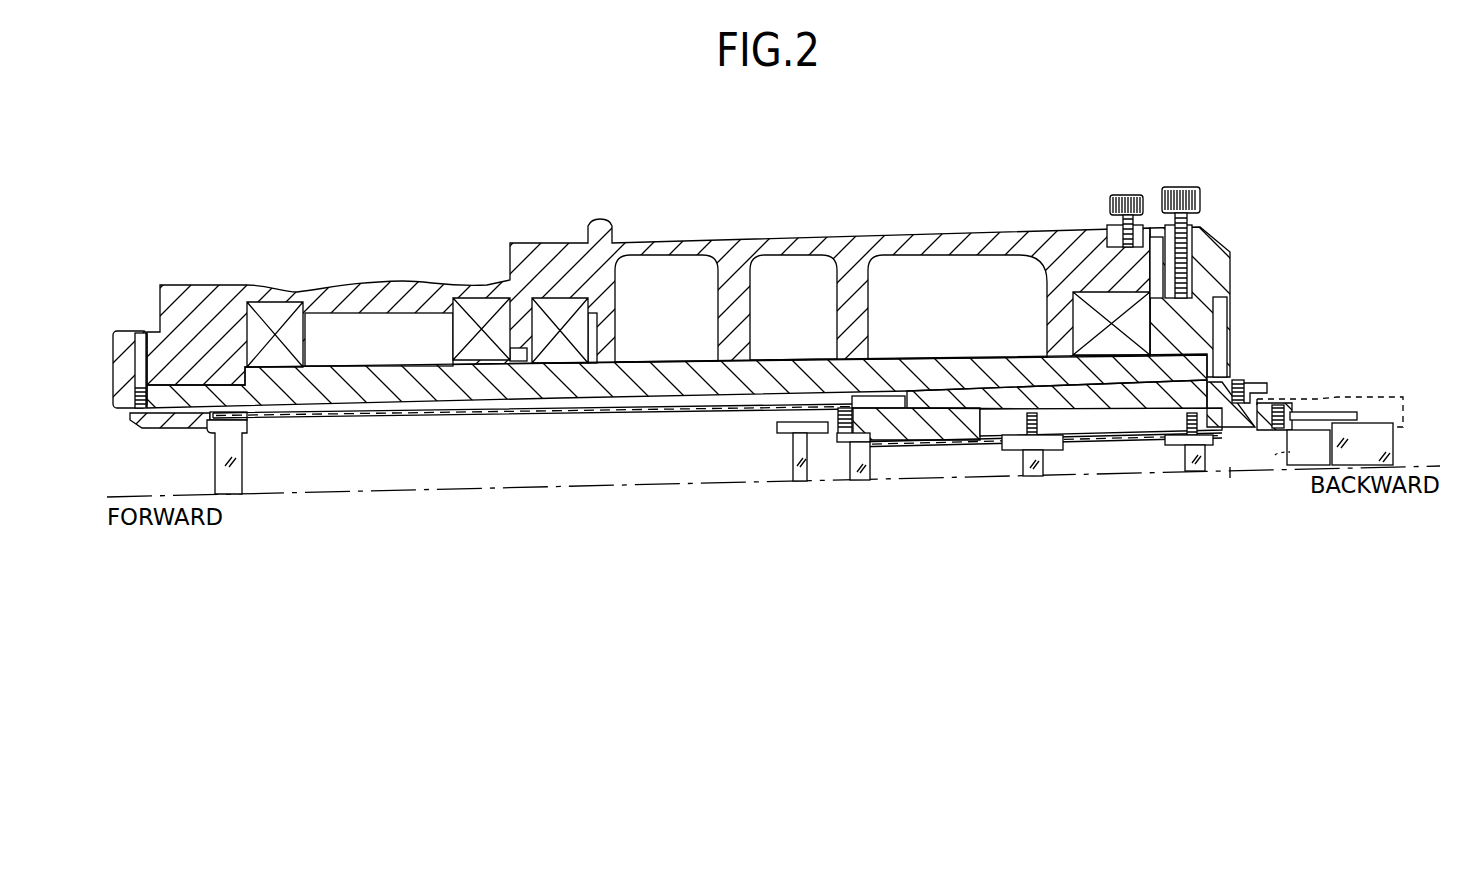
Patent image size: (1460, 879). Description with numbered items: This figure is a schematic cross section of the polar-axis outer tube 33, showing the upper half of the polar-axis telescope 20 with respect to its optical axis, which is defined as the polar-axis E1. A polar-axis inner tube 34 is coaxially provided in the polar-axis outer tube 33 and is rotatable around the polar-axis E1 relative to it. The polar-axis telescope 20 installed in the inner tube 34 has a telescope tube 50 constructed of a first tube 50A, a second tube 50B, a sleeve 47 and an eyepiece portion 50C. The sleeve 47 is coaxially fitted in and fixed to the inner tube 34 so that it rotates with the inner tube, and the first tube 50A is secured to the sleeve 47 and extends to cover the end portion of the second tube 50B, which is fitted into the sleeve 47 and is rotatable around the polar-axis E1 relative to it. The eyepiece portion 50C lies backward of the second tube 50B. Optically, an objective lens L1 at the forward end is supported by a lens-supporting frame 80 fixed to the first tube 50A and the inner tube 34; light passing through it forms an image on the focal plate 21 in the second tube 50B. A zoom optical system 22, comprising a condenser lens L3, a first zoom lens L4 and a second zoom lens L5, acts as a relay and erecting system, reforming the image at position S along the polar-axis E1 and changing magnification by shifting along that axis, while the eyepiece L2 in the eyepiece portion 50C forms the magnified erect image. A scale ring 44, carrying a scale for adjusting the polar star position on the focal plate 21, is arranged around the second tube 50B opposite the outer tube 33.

The polar-axis telescope 20 is at (1287, 389).
The focal plate 21 is at (787, 482).
The zoom optical system 22 is at (1022, 518).
The polar-axis outer tube 33 is at (1040, 202).
The polar-axis inner tube 34 is at (1022, 378).
The scale ring 44 is at (1213, 230).
The sleeve 47 is at (990, 407).
The telescope tube 50 is at (814, 376).
The first tube 50A is at (527, 414).
The second tube 50B is at (942, 427).
The eyepiece portion 50C is at (1397, 398).
The lens-supporting frame 80 is at (173, 428).
The objective lens L1 is at (242, 477).
The eyepiece L2 is at (1394, 431).
The condenser lens L3 is at (852, 481).
The first zoom lens L4 is at (1020, 478).
The second zoom lens L5 is at (1189, 489).
The polar-axis E1 is at (1230, 467).
The image reforming position S is at (1275, 455).